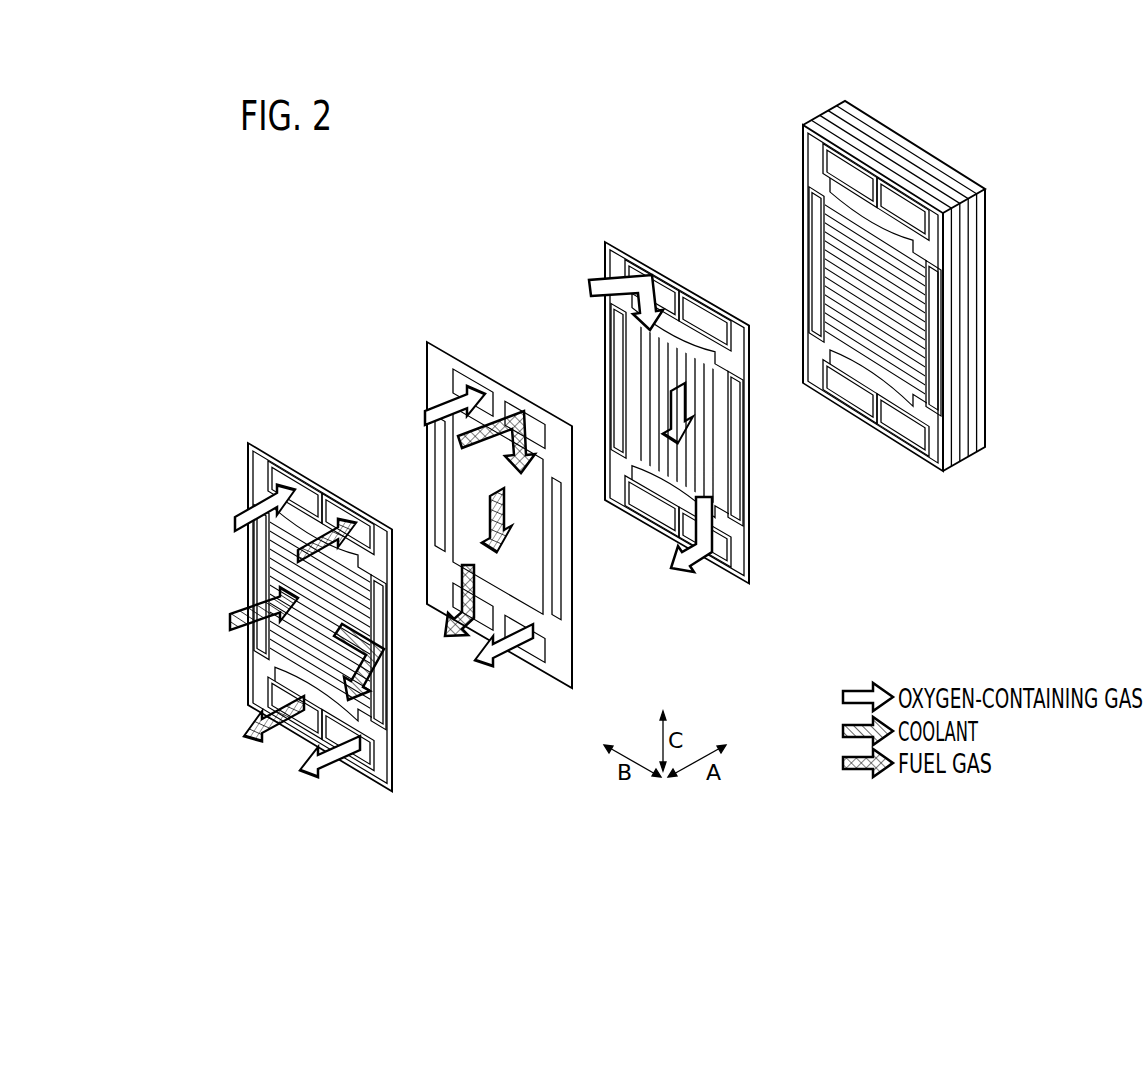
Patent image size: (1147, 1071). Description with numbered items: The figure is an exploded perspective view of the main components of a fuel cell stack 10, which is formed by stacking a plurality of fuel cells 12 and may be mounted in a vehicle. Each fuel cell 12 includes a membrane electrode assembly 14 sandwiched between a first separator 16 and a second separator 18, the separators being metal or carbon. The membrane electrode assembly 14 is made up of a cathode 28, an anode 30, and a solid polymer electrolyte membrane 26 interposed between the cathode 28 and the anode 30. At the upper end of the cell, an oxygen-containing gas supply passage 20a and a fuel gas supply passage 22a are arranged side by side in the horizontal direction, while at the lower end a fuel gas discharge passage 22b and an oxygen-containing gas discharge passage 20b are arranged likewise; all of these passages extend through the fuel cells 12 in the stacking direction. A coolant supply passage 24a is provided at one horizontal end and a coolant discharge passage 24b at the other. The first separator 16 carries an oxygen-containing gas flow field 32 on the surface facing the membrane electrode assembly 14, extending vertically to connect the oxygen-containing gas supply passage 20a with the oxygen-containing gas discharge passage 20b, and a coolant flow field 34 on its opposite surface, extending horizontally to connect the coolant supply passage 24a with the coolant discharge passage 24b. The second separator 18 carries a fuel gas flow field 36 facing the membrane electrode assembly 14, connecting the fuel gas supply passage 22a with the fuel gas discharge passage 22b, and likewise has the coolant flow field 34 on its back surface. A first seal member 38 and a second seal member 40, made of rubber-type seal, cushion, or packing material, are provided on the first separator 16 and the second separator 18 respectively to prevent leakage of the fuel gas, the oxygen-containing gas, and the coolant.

The fuel cell stack 10 is at (344, 184).
The fuel cell 12 is at (836, 101).
The membrane electrode assembly 14 is at (471, 497).
The first separator 16 is at (621, 413).
The second separator 18 is at (314, 584).
The oxygen-containing gas supply passage 20a is at (302, 495).
The oxygen-containing gas discharge passage 20b is at (360, 752).
The fuel gas supply passage 22a is at (346, 523).
The fuel gas discharge passage 22b is at (282, 700).
The coolant supply passage 24a is at (263, 543).
The coolant discharge passage 24b is at (378, 698).
The solid polymer electrolyte membrane 26 is at (505, 403).
The cathode 28 is at (480, 476).
The anode 30 is at (467, 497).
The oxygen-containing gas flow field 32 is at (700, 397).
The coolant flow field 34 is at (705, 443).
The fuel gas flow field 36 is at (265, 640).
The first seal member 38 is at (750, 345).
The second seal member 40 is at (248, 482).